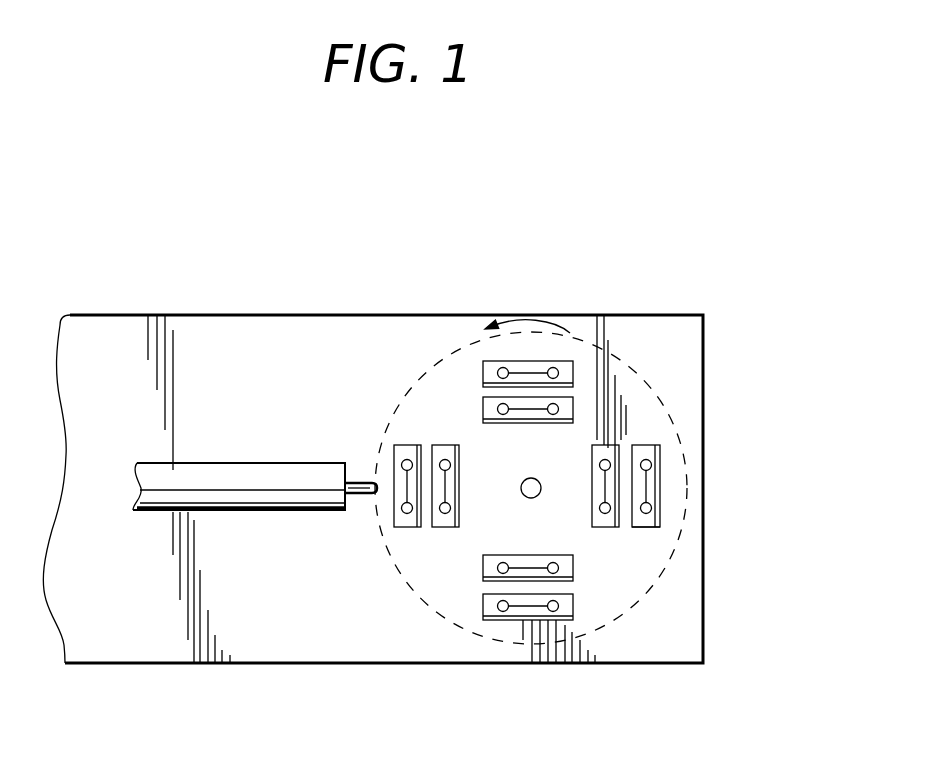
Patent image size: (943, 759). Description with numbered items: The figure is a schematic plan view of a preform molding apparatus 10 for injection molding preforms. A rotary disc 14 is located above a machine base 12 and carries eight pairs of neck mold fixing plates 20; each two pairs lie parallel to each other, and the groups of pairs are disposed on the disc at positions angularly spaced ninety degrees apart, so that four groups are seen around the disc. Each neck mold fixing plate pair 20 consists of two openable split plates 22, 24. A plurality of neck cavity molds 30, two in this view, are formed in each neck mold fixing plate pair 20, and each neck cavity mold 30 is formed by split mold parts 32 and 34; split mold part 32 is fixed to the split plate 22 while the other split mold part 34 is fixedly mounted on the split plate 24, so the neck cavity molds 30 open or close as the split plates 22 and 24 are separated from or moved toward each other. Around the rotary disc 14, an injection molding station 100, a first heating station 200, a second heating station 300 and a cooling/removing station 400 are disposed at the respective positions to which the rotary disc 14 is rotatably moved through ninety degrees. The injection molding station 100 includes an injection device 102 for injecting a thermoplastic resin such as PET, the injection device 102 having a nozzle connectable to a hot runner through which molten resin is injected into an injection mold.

The preform molding apparatus 10 is at (449, 529).
The machine base 12 is at (686, 644).
The rotary disc 14 is at (658, 566).
The neck mold fixing plate pair 20 is at (744, 427).
The split plate 22 is at (640, 445).
The split plate 24 is at (649, 445).
The neck cavity mold 30 is at (652, 465).
The split mold part 32 is at (652, 506).
The split mold part 34 is at (643, 540).
The injection molding station 100 is at (392, 546).
The injection device 102 is at (197, 486).
The first heating station 200 is at (470, 610).
The second heating station 300 is at (724, 535).
The cooling/removing station 400 is at (465, 385).